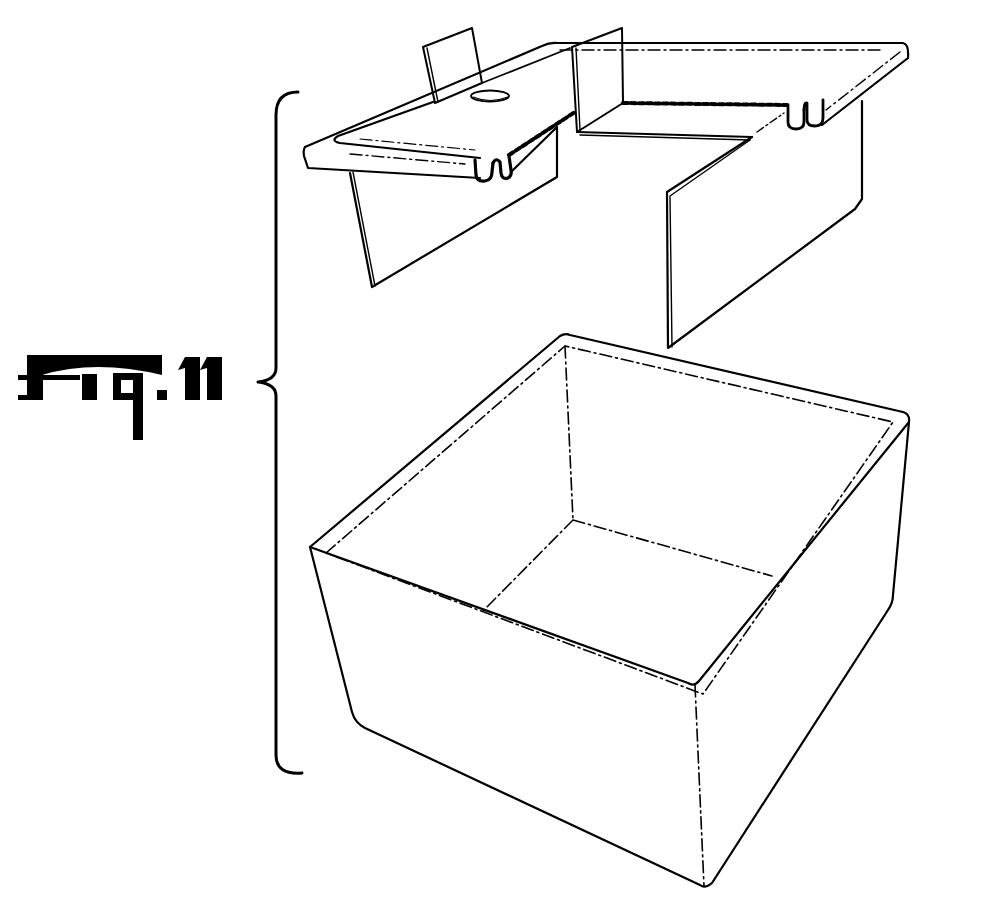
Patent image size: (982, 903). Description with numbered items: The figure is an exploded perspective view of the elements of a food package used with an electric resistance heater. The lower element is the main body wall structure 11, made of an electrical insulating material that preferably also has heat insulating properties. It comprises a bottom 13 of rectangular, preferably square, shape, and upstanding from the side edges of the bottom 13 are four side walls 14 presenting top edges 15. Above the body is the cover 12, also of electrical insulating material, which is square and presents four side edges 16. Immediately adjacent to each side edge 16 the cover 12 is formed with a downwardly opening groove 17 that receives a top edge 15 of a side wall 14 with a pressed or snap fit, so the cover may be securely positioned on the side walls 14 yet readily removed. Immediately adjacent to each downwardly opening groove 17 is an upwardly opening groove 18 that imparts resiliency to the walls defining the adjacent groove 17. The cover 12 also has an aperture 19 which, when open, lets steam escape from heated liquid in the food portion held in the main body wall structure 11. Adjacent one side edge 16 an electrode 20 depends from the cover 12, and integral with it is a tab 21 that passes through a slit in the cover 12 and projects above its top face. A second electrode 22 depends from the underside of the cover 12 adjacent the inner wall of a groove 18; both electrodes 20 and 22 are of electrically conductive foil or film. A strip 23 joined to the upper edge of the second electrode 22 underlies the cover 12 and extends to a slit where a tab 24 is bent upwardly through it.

The main body wall structure 11 is at (412, 768).
The cover 12 is at (450, 345).
The bottom 13 is at (628, 603).
The side walls 14 is at (760, 415).
The top edges 15 is at (836, 393).
The side edges 16 is at (517, 55).
The downwardly opening groove 17 is at (488, 184).
The upwardly opening groove 18 is at (499, 156).
The aperture 19 is at (510, 91).
The electrode 20 is at (463, 217).
The tab 21 is at (483, 12).
The second electrode 22 is at (767, 210).
The strip 23 is at (700, 128).
The tab 24 is at (607, 62).